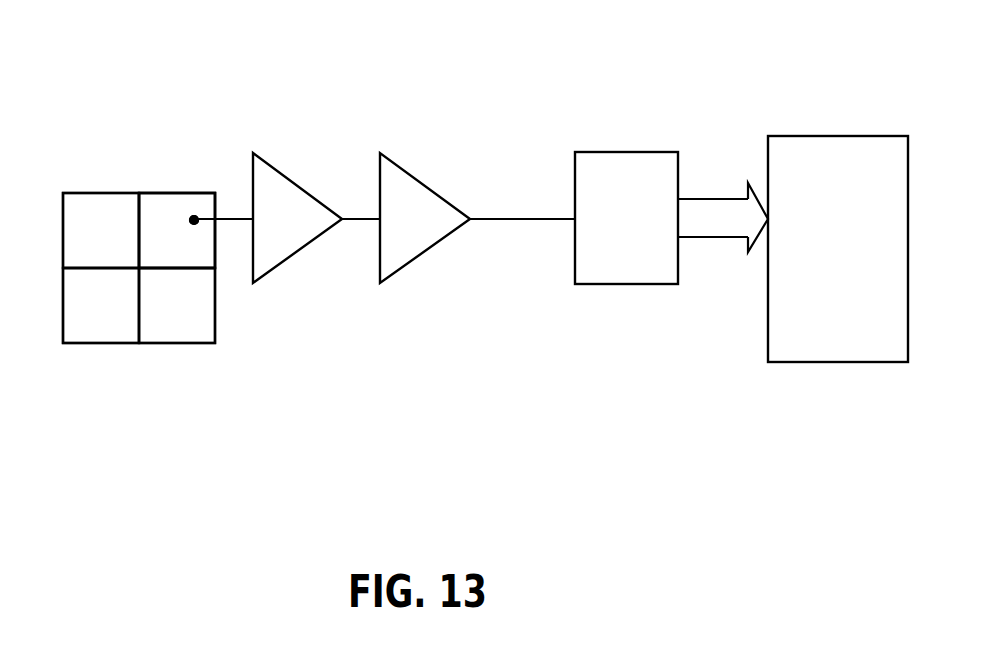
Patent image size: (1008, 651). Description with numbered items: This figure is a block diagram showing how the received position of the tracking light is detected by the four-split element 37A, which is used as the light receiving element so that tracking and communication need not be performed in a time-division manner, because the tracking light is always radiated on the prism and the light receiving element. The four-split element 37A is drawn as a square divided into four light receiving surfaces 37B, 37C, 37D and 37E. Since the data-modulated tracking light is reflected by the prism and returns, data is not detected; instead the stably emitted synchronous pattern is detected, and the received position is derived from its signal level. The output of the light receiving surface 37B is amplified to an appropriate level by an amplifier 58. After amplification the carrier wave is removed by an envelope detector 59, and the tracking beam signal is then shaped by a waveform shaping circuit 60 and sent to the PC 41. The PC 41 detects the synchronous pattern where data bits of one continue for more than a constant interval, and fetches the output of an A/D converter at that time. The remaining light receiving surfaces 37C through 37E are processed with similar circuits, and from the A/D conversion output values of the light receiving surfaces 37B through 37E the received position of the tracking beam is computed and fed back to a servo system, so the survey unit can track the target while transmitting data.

The 4-split element 37A is at (155, 212).
The light receiving surface 37B is at (178, 215).
The light receiving surface 37C is at (202, 318).
The light receiving surface 37D is at (90, 323).
The light receiving surface 37E is at (87, 212).
The amplifier 58 is at (275, 250).
The envelope detector 59 is at (410, 245).
The waveform shaping circuit 60 is at (600, 270).
The PC 41 is at (805, 347).